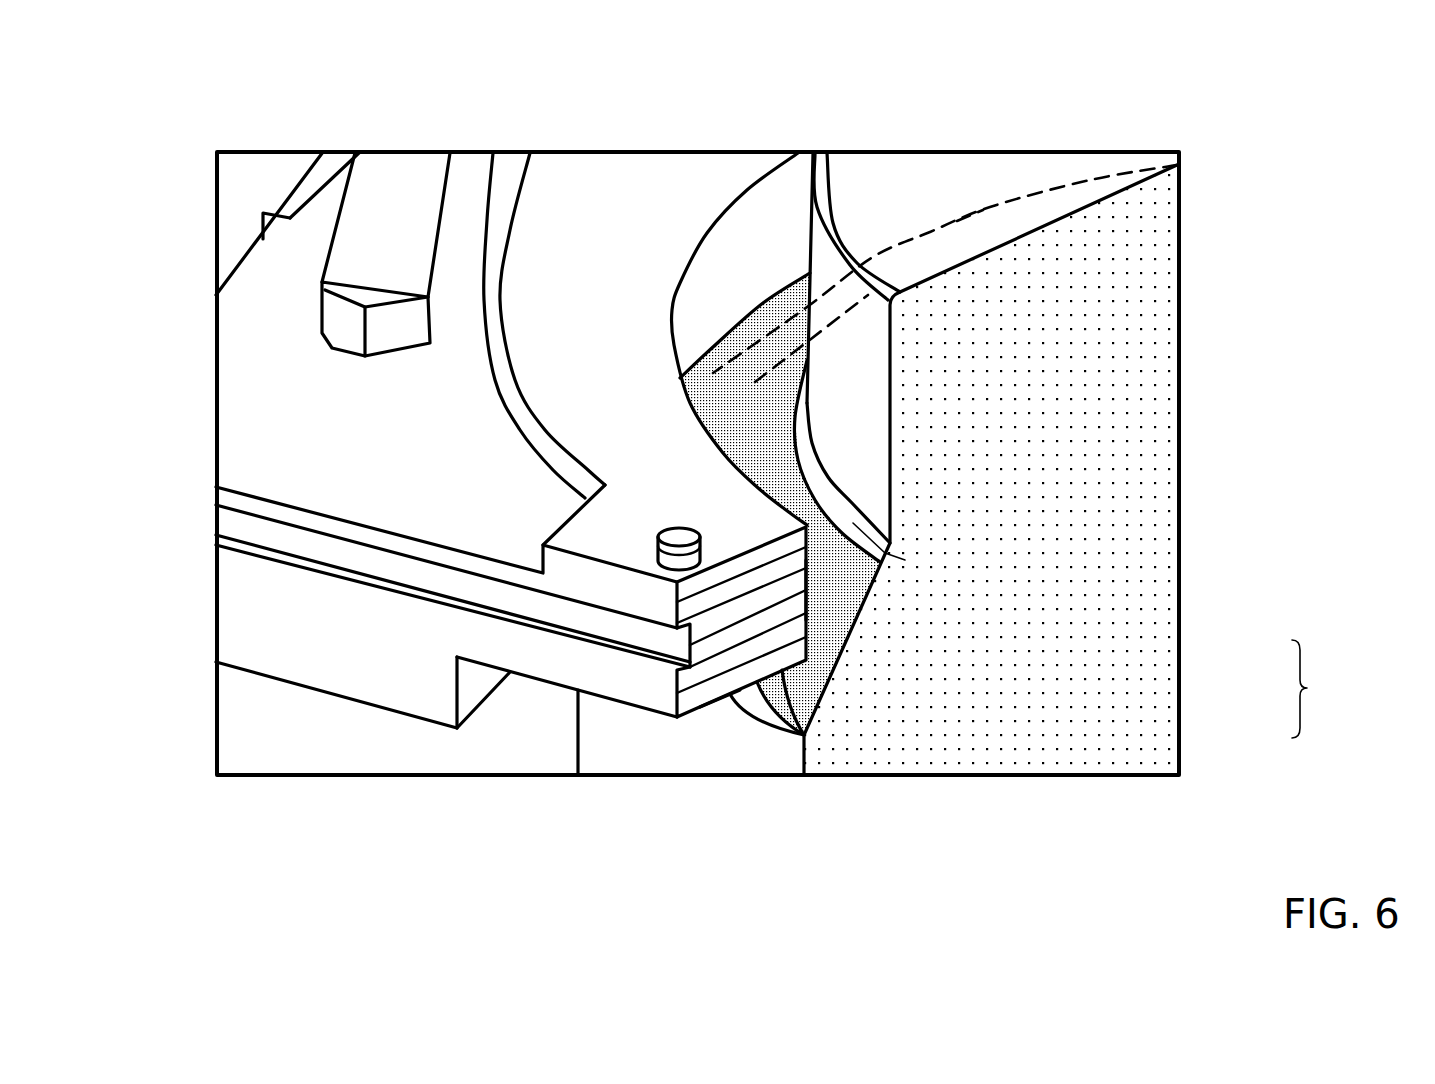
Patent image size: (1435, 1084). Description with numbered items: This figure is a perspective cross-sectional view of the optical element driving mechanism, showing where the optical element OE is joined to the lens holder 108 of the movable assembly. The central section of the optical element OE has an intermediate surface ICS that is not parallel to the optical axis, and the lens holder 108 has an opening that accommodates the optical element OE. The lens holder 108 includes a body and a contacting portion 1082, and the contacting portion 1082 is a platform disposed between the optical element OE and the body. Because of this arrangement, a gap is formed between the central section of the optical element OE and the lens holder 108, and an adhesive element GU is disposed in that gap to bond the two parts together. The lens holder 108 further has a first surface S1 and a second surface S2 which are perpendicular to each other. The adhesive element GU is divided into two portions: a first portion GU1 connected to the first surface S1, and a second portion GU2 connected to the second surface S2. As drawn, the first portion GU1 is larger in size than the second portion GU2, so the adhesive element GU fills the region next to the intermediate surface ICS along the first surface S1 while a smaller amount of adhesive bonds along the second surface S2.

The lens holder 108 is at (332, 553).
The contacting portion 1082 is at (840, 280).
The optical element OE is at (1090, 363).
The intermediate surface ICS is at (905, 560).
The first surface S1 is at (815, 583).
The second surface S2 is at (708, 708).
The adhesive element GU is at (1320, 689).
The first portion GU1 is at (830, 617).
The second portion GU2 is at (797, 693).